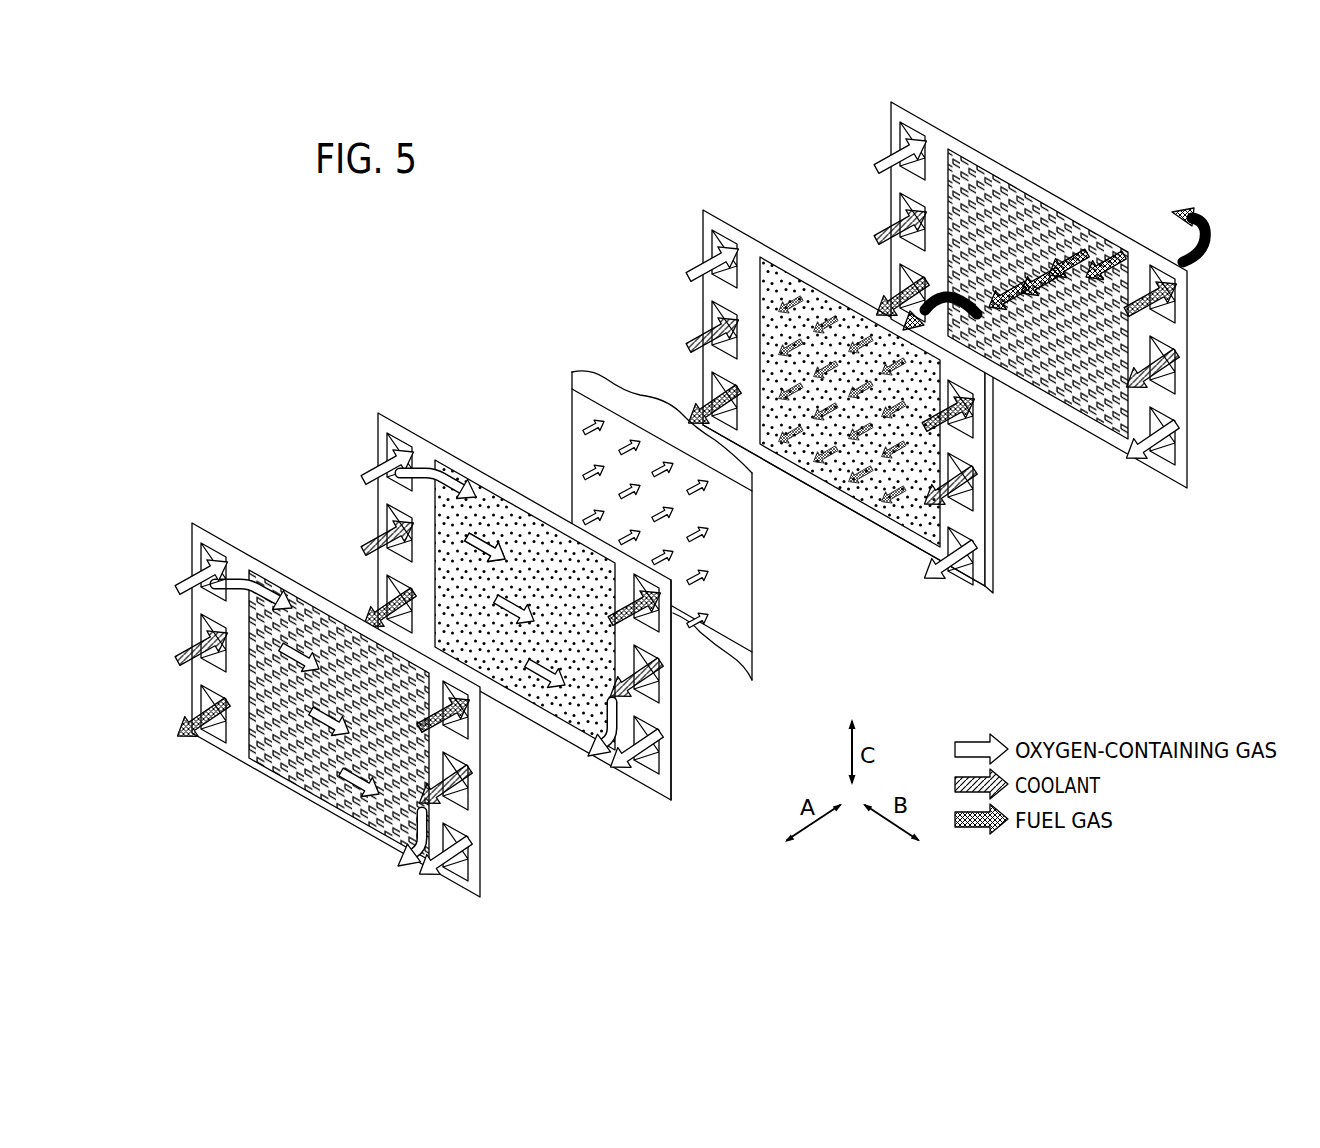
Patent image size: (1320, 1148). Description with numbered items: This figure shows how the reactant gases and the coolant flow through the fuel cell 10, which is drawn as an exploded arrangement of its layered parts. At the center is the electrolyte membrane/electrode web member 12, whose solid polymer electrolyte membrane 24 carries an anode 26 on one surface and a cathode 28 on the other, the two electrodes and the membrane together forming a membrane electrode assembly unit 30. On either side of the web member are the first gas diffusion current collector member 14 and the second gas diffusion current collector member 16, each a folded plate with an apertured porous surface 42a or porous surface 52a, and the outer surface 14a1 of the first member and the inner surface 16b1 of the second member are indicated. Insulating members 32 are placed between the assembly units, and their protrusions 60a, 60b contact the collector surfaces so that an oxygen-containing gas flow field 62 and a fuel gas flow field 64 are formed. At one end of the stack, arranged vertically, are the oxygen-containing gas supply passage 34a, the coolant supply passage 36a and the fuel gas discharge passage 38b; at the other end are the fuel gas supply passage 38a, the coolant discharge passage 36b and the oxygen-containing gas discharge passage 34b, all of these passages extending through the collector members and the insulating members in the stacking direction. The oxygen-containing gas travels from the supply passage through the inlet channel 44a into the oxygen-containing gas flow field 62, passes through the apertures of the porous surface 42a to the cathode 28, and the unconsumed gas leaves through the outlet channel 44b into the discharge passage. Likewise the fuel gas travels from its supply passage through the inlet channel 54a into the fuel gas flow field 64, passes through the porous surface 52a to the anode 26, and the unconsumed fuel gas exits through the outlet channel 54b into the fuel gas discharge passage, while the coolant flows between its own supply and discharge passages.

The fuel cell 10 is at (338, 284).
The electrolyte membrane/electrode web member 12 is at (560, 350).
The first gas diffusion current collector member 14 is at (370, 405).
The second gas diffusion current collector member 16 is at (696, 206).
The solid polymer electrolyte membrane 24 is at (574, 377).
The anode 26 is at (590, 440).
The cathode 28 is at (578, 403).
The membrane electrode assembly unit 30 is at (518, 365).
The insulating member 32 is at (882, 120).
The oxygen-containing gas supply passage 34a is at (200, 556).
The oxygen-containing gas discharge passage 34b is at (470, 877).
The coolant supply passage 36a is at (200, 627).
The coolant discharge passage 36b is at (470, 805).
The fuel gas supply passage 38a is at (470, 737).
The fuel gas discharge passage 38b is at (200, 697).
The porous surface 42a is at (572, 720).
The inlet channel 44a is at (437, 457).
The outlet channel 44b is at (662, 745).
The porous surface 52a is at (895, 520).
The inlet channel 54a is at (963, 430).
The outlet channel 54b is at (757, 430).
The protrusion 60a is at (326, 628).
The protrusion 60b is at (292, 760).
The oxygen-containing gas flow field 62 is at (487, 545).
The fuel gas flow field 64 is at (1072, 252).
The surface 14a1 is at (662, 796).
The surface 16b1 is at (832, 505).